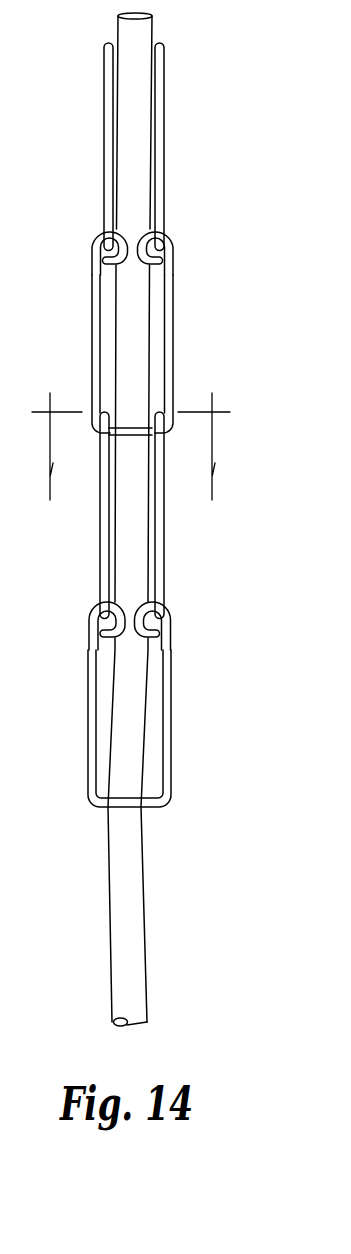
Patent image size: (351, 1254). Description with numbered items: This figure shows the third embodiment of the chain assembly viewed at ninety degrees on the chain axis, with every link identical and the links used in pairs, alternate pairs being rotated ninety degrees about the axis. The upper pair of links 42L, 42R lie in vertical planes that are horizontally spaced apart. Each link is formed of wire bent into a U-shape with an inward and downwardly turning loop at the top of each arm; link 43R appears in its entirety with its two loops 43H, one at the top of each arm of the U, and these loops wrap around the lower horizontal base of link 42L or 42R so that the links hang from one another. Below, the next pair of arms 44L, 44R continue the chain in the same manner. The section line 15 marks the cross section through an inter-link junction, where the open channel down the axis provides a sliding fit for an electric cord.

The link 42L is at (110, 74).
The link 42R is at (157, 102).
The loop 43H is at (102, 231).
The link 43R is at (92, 310).
The left arm of lower link 44L is at (103, 510).
The right arm of lower link 44R is at (153, 532).
The section line 15 is at (131, 437).